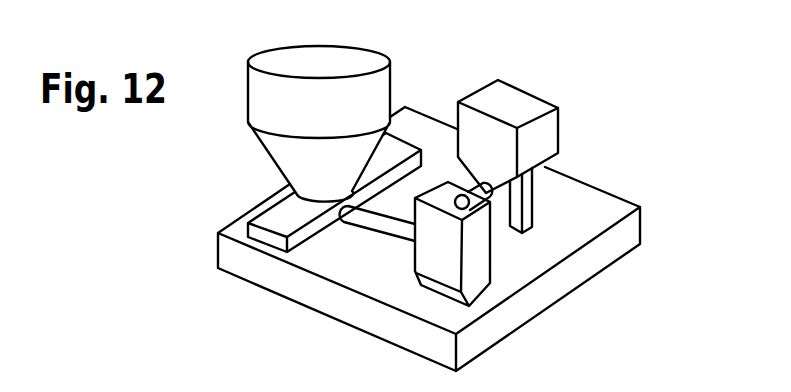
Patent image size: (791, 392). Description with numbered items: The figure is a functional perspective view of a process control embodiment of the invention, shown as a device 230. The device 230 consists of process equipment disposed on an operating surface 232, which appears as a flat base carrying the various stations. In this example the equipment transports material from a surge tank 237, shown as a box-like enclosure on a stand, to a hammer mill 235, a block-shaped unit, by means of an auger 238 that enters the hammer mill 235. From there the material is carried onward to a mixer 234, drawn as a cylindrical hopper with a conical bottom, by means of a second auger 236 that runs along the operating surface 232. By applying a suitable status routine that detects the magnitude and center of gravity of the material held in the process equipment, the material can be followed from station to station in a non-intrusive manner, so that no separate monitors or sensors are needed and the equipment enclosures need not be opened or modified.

The device 230 is at (578, 83).
The operating surface 232 is at (603, 193).
The mixer 234 is at (270, 49).
The hammer mill 235 is at (440, 293).
The auger 236 is at (372, 233).
The surge tank 237 is at (482, 87).
The auger 238 is at (480, 197).